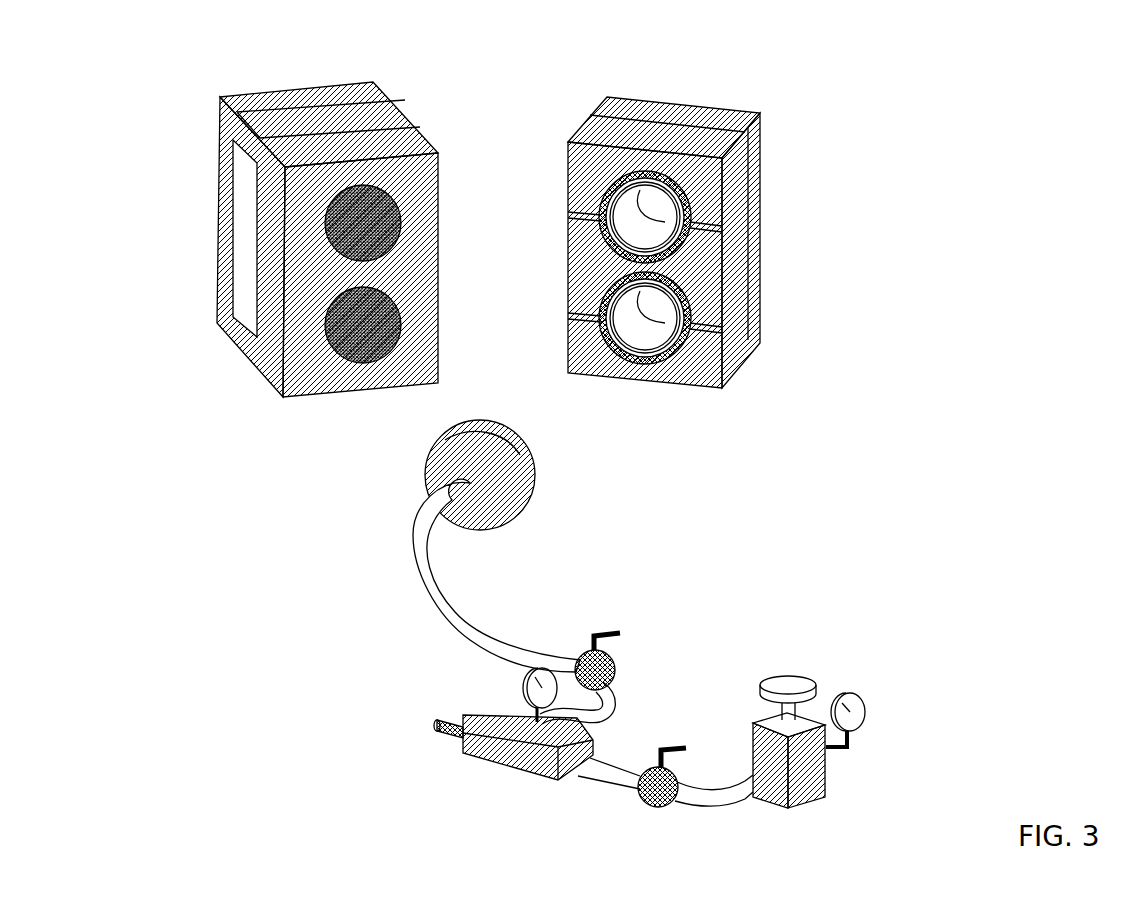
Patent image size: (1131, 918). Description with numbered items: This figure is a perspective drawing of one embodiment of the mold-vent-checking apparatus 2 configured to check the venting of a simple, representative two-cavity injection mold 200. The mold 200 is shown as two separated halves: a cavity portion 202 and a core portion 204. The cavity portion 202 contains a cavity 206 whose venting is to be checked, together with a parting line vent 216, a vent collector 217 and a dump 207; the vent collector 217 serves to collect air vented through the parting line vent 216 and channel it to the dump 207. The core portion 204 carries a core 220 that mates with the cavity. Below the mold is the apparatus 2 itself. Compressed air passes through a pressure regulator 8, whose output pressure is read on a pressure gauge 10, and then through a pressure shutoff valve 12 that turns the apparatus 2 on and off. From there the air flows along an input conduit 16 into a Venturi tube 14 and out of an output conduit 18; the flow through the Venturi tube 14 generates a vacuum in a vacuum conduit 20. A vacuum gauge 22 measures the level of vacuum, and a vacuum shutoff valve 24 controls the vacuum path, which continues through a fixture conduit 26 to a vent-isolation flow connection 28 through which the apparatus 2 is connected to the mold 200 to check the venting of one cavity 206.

The two-cavity injection mold 200 is at (742, 78).
The core portion 204 is at (257, 280).
The cavity portion 202 is at (738, 282).
The core 220 is at (343, 353).
The parting line vent 216 is at (687, 287).
The vent collector 217 is at (683, 310).
The cavity 206 is at (645, 337).
The dump 207 is at (707, 327).
The mold-vent-checking apparatus 2 is at (750, 536).
The vent-isolation flow connection 28 is at (480, 447).
The fixture conduit 26 is at (432, 587).
The vacuum shutoff valve 24 is at (603, 662).
The vacuum gauge 22 is at (532, 688).
The vacuum conduit 20 is at (617, 702).
The output conduit 18 is at (443, 735).
The Venturi tube 14 is at (490, 748).
The input conduit 16 is at (612, 770).
The pressure shutoff valve 12 is at (645, 795).
The pressure regulator 8 is at (812, 730).
The pressure gauge 10 is at (866, 712).